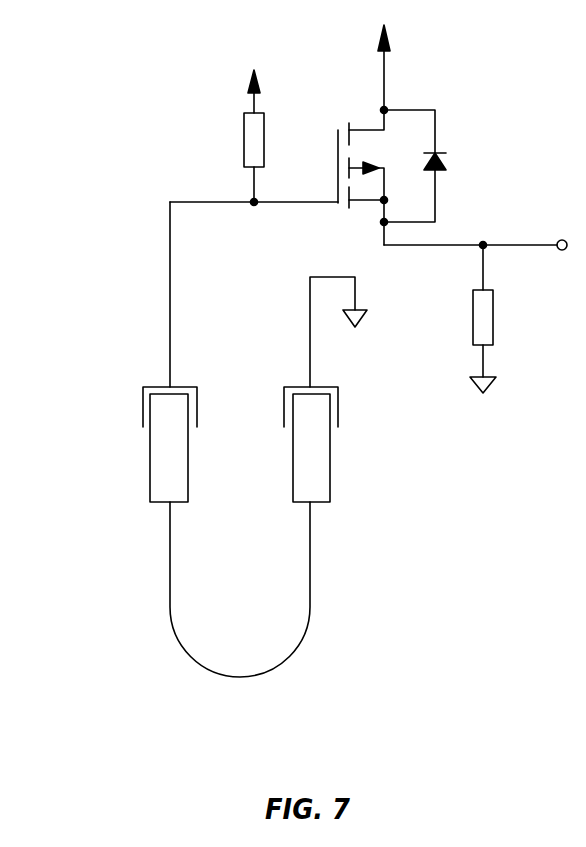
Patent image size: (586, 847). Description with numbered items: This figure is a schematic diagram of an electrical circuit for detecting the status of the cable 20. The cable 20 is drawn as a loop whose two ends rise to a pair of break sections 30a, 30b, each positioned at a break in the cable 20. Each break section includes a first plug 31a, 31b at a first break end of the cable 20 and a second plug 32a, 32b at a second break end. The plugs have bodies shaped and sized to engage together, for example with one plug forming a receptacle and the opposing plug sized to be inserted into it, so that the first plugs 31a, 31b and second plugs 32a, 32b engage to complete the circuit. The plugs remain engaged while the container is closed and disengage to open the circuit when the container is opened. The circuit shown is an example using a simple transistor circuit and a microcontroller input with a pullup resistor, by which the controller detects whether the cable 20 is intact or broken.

The cable 20 is at (169, 630).
The break section 30a is at (120, 396).
The break section 30b is at (330, 392).
The first plug 31a is at (143, 402).
The first plug 31b is at (339, 408).
The second plug 32a is at (150, 476).
The second plug 32b is at (330, 463).